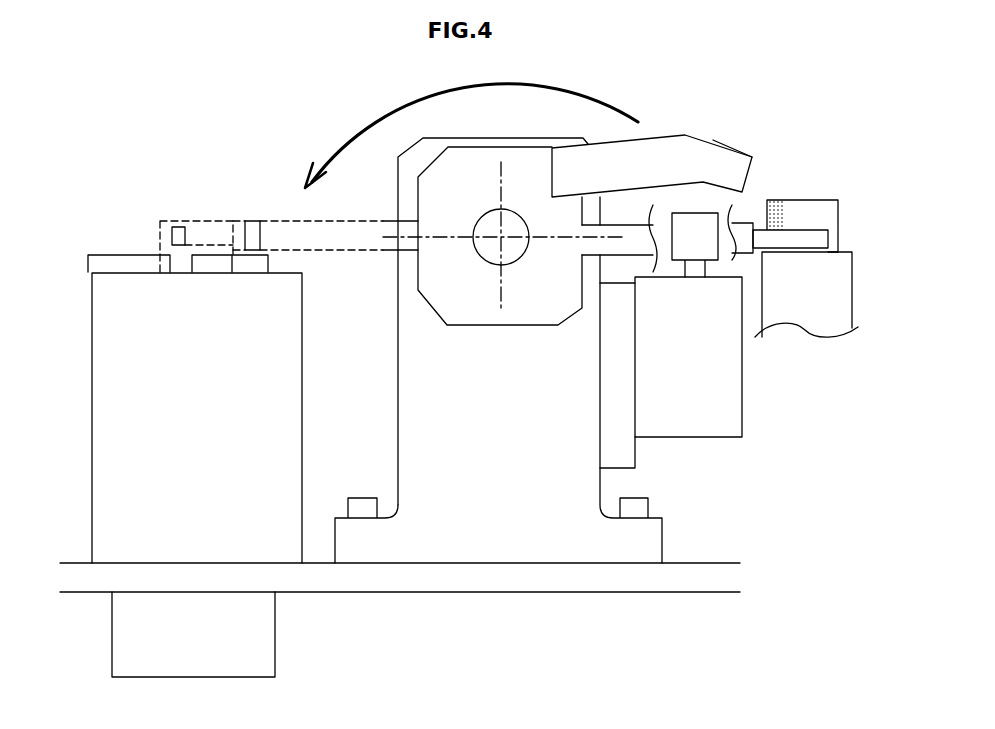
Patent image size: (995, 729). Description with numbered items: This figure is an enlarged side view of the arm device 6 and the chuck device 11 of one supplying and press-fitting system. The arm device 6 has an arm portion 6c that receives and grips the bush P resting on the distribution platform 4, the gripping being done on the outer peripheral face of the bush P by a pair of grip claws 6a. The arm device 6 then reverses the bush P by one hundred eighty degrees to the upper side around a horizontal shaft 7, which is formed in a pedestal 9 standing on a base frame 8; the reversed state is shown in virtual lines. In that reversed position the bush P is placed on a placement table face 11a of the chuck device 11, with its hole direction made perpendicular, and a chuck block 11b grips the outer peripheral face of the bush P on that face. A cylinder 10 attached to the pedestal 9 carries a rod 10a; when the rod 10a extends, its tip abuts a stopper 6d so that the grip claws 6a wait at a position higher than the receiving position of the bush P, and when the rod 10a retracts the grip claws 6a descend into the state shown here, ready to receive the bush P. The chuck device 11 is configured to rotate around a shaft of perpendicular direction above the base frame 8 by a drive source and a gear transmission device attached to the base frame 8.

The distribution platform 4 is at (828, 287).
The arm device 6 is at (685, 135).
The grip claws 6a is at (821, 228).
The arm portion 6c is at (741, 223).
The stopper 6d is at (714, 140).
The shaft 7 is at (484, 210).
The base frame 8 is at (688, 562).
The pedestal 9 is at (398, 405).
The cylinder 10 is at (742, 406).
The rod 10a is at (695, 268).
The chuck device 11 is at (92, 345).
The placement table face 11a is at (183, 240).
The chuck block 11b is at (112, 255).
The bush P is at (220, 225).